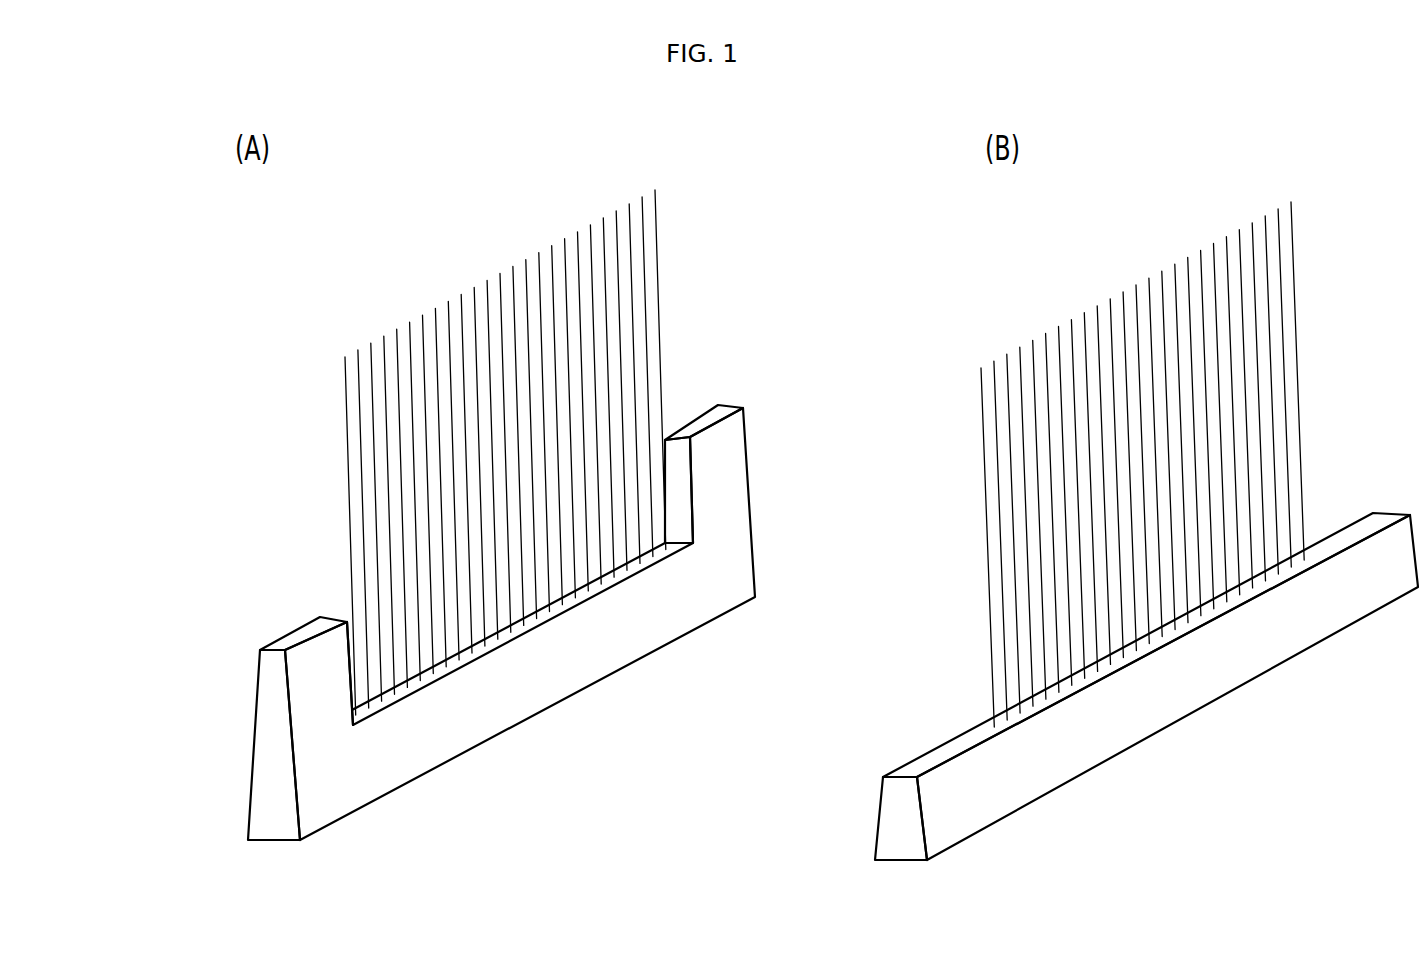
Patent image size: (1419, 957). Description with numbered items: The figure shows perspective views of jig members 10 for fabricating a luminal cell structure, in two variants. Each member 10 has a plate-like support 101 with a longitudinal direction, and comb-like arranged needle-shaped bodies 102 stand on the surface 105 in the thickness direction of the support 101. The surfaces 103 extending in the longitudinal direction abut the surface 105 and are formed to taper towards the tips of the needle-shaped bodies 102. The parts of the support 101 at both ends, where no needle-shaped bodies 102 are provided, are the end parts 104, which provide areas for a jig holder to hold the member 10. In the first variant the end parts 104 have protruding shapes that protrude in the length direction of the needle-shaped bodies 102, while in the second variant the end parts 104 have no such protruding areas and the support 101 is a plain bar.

The jig member 10 is at (722, 188).
The support 101 is at (440, 767).
The needle-shaped bodies 102 is at (346, 468).
The surfaces extending in the longitudinal direction 103 is at (561, 680).
The end parts 104 is at (262, 650).
The surface in the thickness direction 105 is at (676, 541).